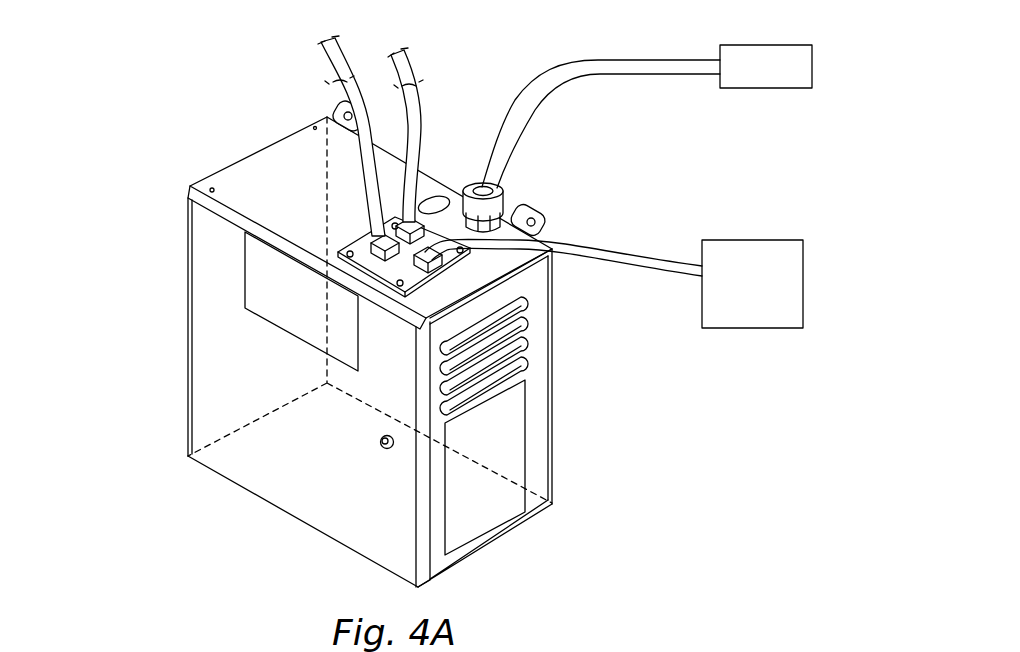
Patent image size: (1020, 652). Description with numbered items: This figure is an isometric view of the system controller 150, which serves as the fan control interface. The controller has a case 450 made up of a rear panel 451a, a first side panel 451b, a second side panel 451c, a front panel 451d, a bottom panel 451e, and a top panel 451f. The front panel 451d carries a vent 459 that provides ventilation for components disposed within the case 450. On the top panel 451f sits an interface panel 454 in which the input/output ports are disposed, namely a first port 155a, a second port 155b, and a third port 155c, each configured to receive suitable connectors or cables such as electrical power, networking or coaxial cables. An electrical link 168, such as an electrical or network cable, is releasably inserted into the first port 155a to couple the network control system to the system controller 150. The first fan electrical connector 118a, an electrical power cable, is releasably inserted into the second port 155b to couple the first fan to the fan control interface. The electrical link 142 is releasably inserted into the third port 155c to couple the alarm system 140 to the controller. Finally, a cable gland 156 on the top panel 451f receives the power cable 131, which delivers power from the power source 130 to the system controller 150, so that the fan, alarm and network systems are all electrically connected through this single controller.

The system controller 150 is at (150, 183).
The case 450 is at (188, 297).
The rear panel 451a is at (213, 253).
The first side panel 451b is at (208, 362).
The second side panel 451c is at (523, 367).
The front panel 451d is at (543, 452).
The bottom panel 451e is at (314, 490).
The top panel 451f is at (255, 183).
The vent 459 is at (510, 343).
The first port 155a is at (377, 233).
The second port 155b is at (424, 200).
The third port 155c is at (412, 262).
The electrical link 168 is at (350, 90).
The interface panel 454 is at (392, 183).
The first fan electrical connector 118a is at (424, 115).
The cable gland 156 is at (496, 198).
The power cable 131 is at (612, 77).
The power source 130 is at (763, 89).
The alarm system 140 is at (768, 240).
The electrical link 142 is at (673, 262).